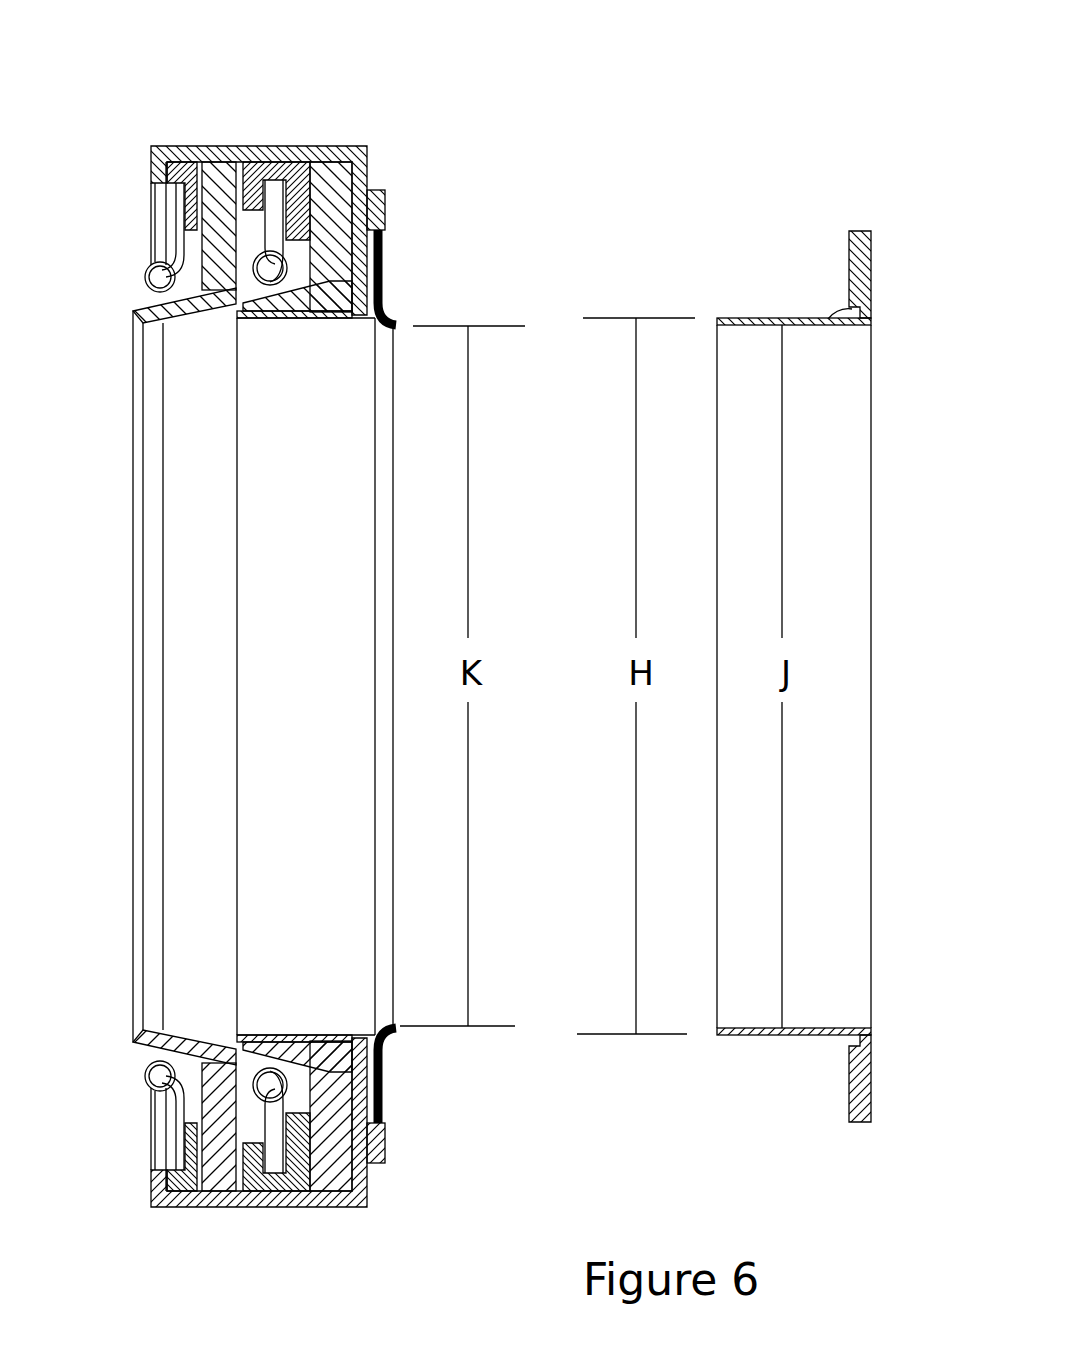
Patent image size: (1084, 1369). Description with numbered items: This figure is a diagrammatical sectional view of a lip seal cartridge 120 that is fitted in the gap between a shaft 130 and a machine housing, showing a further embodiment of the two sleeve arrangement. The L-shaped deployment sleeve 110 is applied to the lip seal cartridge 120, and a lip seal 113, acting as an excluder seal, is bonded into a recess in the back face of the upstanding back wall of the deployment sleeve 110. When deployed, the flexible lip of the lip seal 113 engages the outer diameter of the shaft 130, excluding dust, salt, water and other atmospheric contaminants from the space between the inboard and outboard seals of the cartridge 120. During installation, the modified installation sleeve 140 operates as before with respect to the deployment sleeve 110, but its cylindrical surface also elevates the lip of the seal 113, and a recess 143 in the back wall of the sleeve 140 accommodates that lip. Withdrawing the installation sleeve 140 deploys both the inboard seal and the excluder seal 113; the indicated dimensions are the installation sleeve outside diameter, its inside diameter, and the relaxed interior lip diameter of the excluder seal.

The lip seal cartridge 120 is at (235, 127).
The deployment sleeve 110 is at (385, 203).
The lip seal 113 is at (385, 280).
The shaft 130 is at (332, 680).
The installation sleeve 140 is at (792, 282).
The recess 143 is at (840, 318).